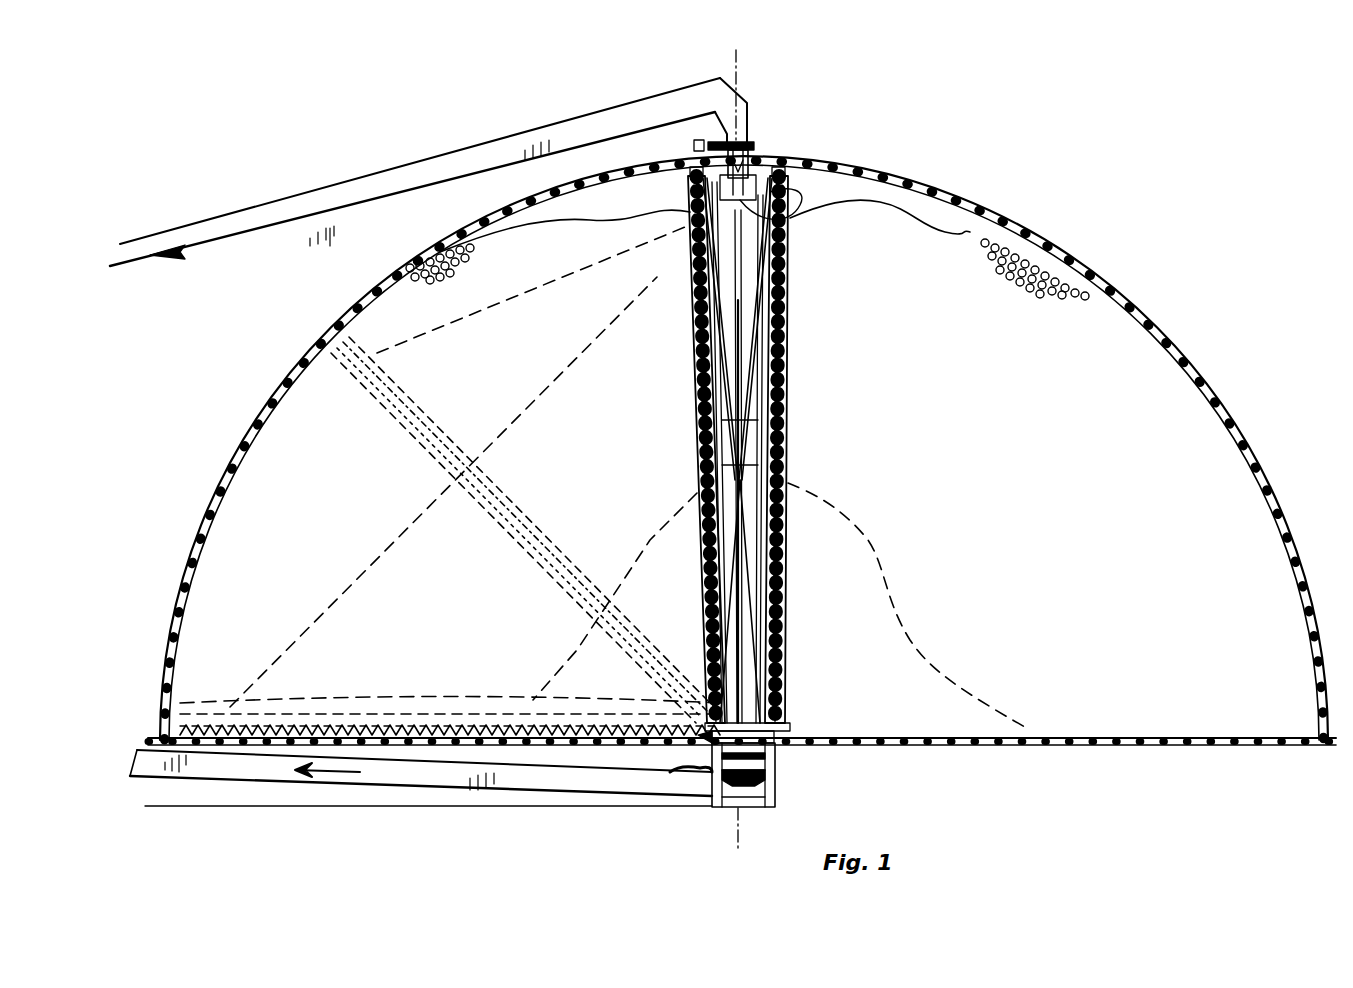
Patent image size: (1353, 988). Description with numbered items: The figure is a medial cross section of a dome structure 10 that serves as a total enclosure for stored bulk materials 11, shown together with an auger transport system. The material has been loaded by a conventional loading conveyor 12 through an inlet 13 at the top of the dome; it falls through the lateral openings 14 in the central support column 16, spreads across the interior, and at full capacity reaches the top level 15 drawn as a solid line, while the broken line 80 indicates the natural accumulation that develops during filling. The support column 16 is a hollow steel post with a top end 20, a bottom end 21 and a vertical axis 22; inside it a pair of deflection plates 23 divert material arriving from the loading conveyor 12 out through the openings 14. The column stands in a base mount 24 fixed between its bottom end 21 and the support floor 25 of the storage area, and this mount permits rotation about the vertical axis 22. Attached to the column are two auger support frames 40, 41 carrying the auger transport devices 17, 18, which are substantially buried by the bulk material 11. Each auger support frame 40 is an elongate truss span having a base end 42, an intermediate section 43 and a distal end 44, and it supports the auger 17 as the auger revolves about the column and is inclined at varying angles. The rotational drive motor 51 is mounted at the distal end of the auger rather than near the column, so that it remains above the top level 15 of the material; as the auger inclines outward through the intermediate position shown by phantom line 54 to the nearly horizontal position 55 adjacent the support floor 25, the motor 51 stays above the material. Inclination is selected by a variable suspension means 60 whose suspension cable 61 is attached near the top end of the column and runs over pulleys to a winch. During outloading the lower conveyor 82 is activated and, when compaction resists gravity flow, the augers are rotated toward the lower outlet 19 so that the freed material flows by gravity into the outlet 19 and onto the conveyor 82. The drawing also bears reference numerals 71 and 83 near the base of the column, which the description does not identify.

The dome structure 10 is at (1120, 286).
The bulk materials 11 is at (1030, 245).
The loading conveyor 12 is at (390, 190).
The inlet 13 is at (748, 152).
The lateral openings 14 is at (758, 180).
The top level 15 is at (940, 218).
The support column 16 is at (790, 275).
The auger transport device 17 is at (698, 408).
The second auger transport device 18 is at (790, 460).
The lower outlet 19 is at (770, 757).
The top end 20 is at (694, 147).
The bottom end 21 is at (775, 737).
The vertical axis 22 is at (738, 451).
The deflection plates 23 is at (745, 225).
The base mount 24 is at (770, 770).
The support floor 25 is at (928, 738).
The auger support frame 40 is at (700, 343).
The second auger support frame 41 is at (803, 376).
The base end 42 is at (745, 716).
The intermediate section 43 is at (740, 483).
The distal end 44 is at (690, 207).
The rotational drive motor 51 is at (690, 178).
The phantom line representation of intermediate inclination 54 is at (440, 403).
The phantom line representation of horizontal orientation 55 is at (334, 682).
The variable suspension means 60 is at (712, 138).
The suspension cable 61 is at (440, 330).
The base seal 71 is at (712, 743).
The broken line of natural accumulation 80 is at (918, 612).
The lower conveyor 82 is at (415, 778).
The outlet housing 83 is at (712, 778).